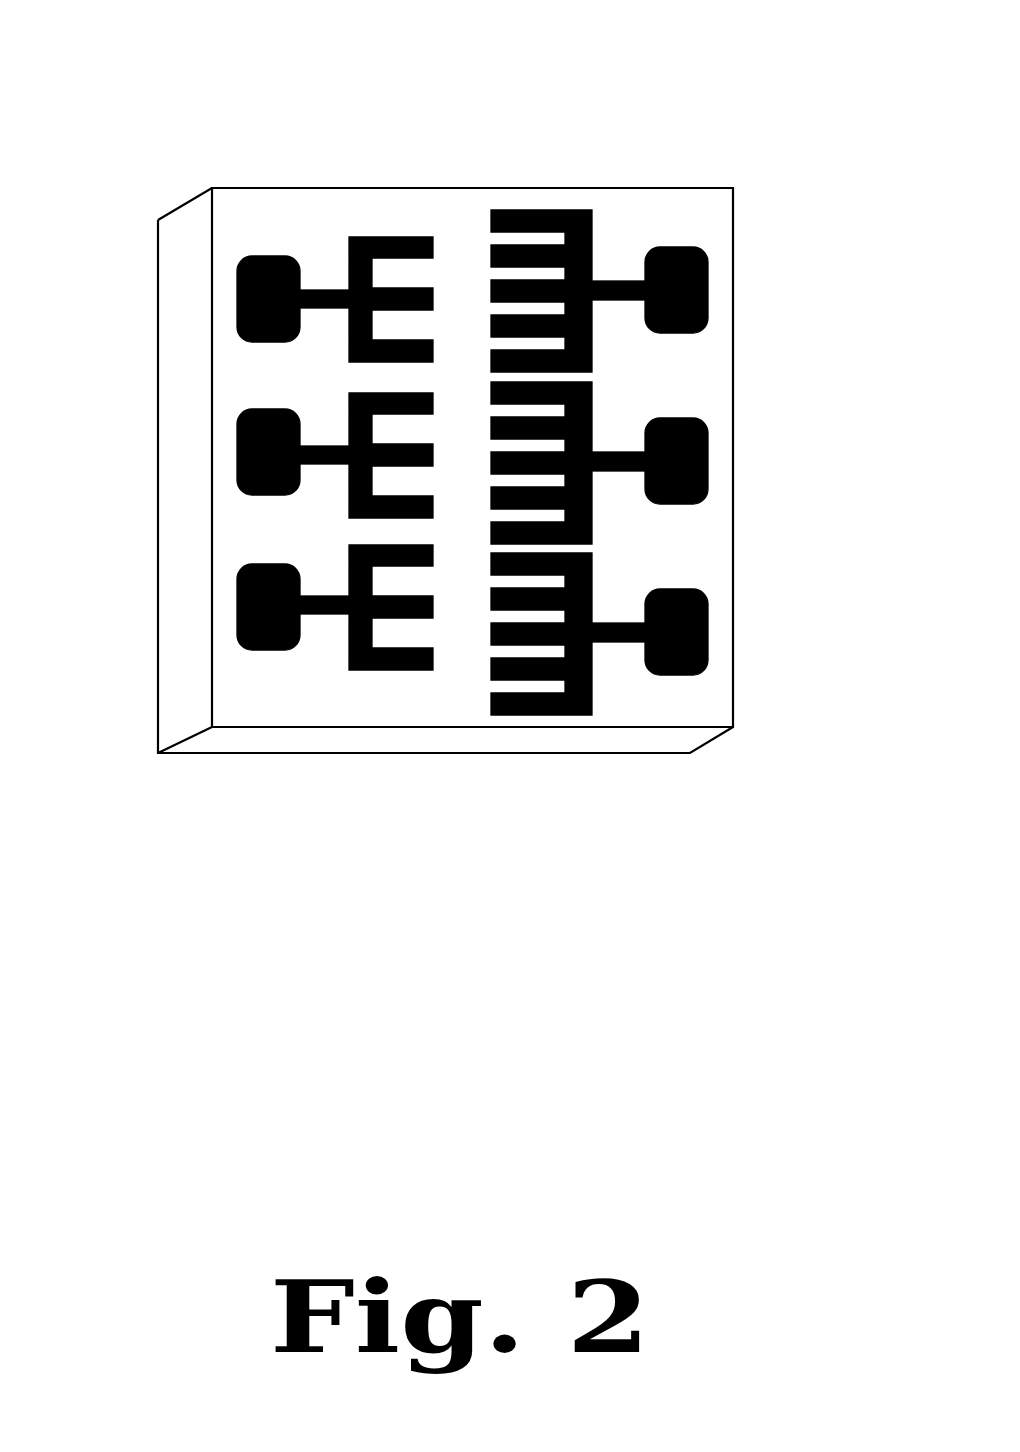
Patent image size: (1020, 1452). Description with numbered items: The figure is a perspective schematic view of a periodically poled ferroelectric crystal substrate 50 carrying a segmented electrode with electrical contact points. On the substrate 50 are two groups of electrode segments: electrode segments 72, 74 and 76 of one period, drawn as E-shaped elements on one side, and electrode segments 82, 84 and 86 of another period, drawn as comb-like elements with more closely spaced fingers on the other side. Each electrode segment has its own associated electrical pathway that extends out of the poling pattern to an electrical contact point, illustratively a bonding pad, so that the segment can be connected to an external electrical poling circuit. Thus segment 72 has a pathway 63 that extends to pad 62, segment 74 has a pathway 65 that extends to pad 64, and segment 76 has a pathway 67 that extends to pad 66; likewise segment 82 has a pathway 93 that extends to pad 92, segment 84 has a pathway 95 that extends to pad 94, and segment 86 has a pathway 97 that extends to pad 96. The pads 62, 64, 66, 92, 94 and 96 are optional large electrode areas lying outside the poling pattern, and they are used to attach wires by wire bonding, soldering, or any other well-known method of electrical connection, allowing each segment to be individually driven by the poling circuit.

The ferroelectric crystal substrate 50 is at (187, 238).
The pad 62 is at (237, 293).
The pathway 63 is at (325, 305).
The pad 64 is at (238, 447).
The pathway 65 is at (330, 462).
The pad 66 is at (238, 600).
The pathway 67 is at (325, 617).
The electrode segment 72 is at (365, 237).
The electrode segment 74 is at (435, 453).
The electrode segment 76 is at (380, 670).
The electrode segment 82 is at (541, 210).
The electrode segment 84 is at (492, 500).
The electrode segment 86 is at (545, 713).
The pad 92 is at (708, 273).
The pathway 93 is at (608, 300).
The pad 94 is at (710, 447).
The pathway 95 is at (608, 470).
The pad 96 is at (710, 620).
The pathway 97 is at (608, 643).